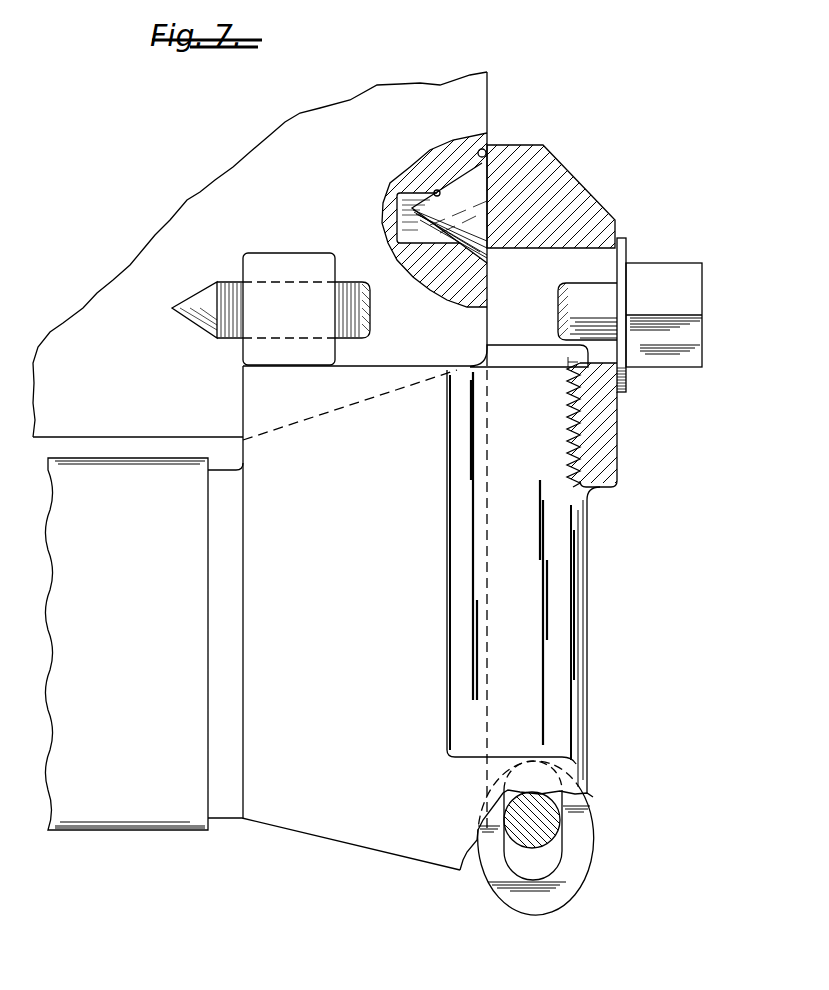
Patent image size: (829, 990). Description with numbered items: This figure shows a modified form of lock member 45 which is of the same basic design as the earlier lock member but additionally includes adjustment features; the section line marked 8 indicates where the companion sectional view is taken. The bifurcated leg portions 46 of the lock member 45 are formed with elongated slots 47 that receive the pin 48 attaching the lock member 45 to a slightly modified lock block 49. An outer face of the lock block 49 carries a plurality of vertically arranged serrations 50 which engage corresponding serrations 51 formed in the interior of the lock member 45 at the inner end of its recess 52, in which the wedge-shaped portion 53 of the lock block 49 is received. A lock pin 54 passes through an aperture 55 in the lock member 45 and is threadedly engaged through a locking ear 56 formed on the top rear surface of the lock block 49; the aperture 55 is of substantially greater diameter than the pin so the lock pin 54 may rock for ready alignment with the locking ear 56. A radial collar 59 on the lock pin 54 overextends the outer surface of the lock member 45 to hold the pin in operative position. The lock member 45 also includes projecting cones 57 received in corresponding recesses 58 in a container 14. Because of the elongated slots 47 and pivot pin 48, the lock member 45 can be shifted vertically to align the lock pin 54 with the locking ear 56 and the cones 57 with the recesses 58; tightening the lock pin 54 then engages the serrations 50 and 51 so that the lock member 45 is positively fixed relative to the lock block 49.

The section line 8- 8 is at (120, 248).
The container 14 is at (327, 118).
The lock member 45 is at (617, 474).
The bifurcated leg portions 46 is at (593, 836).
The elongated slots 47 is at (522, 867).
The pin 48 is at (563, 840).
The lock block 49 is at (243, 383).
The serrations 50 is at (570, 435).
The serrations 51 is at (572, 447).
The recess 52 is at (520, 358).
The wedge-shaped portion 53 is at (487, 368).
The lock pin 54 is at (350, 282).
The aperture 55 is at (590, 247).
The locking ear 56 is at (283, 253).
The projecting cones 57 is at (486, 150).
The recesses 58 is at (420, 167).
The radial collar 59 is at (627, 252).